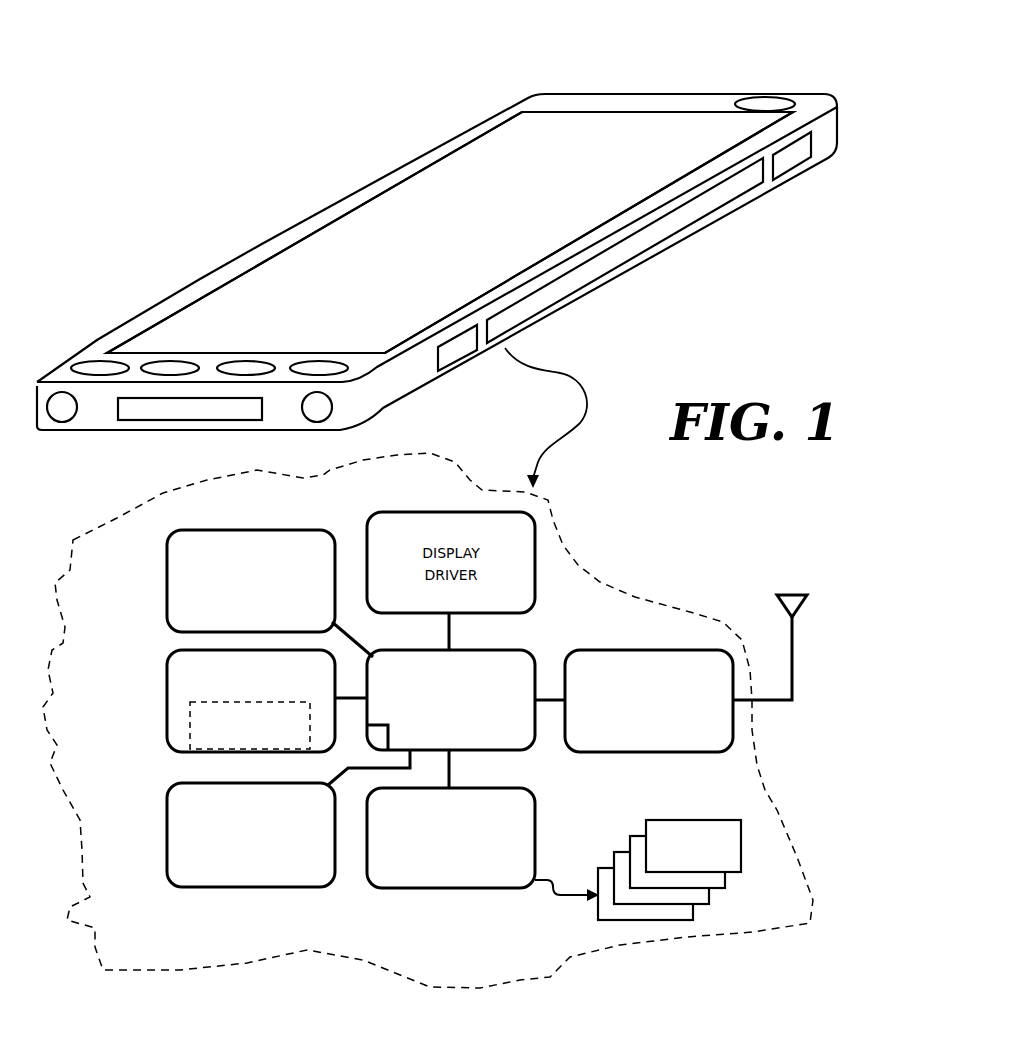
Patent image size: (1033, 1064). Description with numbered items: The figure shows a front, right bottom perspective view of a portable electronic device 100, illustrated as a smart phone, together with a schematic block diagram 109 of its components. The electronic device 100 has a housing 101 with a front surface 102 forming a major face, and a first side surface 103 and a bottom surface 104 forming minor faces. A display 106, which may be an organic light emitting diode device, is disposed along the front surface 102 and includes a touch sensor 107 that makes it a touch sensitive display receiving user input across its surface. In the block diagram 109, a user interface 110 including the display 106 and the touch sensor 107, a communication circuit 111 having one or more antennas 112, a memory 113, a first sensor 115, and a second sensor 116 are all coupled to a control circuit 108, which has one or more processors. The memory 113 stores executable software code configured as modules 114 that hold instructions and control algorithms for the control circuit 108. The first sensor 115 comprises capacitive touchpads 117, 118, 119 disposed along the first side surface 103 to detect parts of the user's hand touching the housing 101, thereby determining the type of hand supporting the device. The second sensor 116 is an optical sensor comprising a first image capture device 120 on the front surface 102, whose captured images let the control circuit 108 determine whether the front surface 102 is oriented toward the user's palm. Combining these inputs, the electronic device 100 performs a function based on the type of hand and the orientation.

The electronic device 100 is at (456, 114).
The housing 101 is at (618, 100).
The front surface 102 is at (292, 278).
The first side surface 103 is at (422, 381).
The bottom surface 104 is at (109, 413).
The display 106 is at (457, 243).
The touch sensor 107 is at (190, 727).
The control circuit 108 is at (493, 750).
The schematic block diagram 109 is at (780, 797).
The user interface 110 is at (167, 692).
The communication circuit 111 is at (685, 650).
The antenna 112 is at (780, 605).
The memory 113 is at (457, 890).
The modules 114 is at (642, 835).
The first sensor 115 is at (302, 528).
The second sensor 116 is at (287, 887).
The capacitive touchpad 117 is at (790, 153).
The capacitive touchpad 118 is at (685, 217).
The capacitive touchpad 119 is at (452, 347).
The first image capture device 120 is at (770, 100).